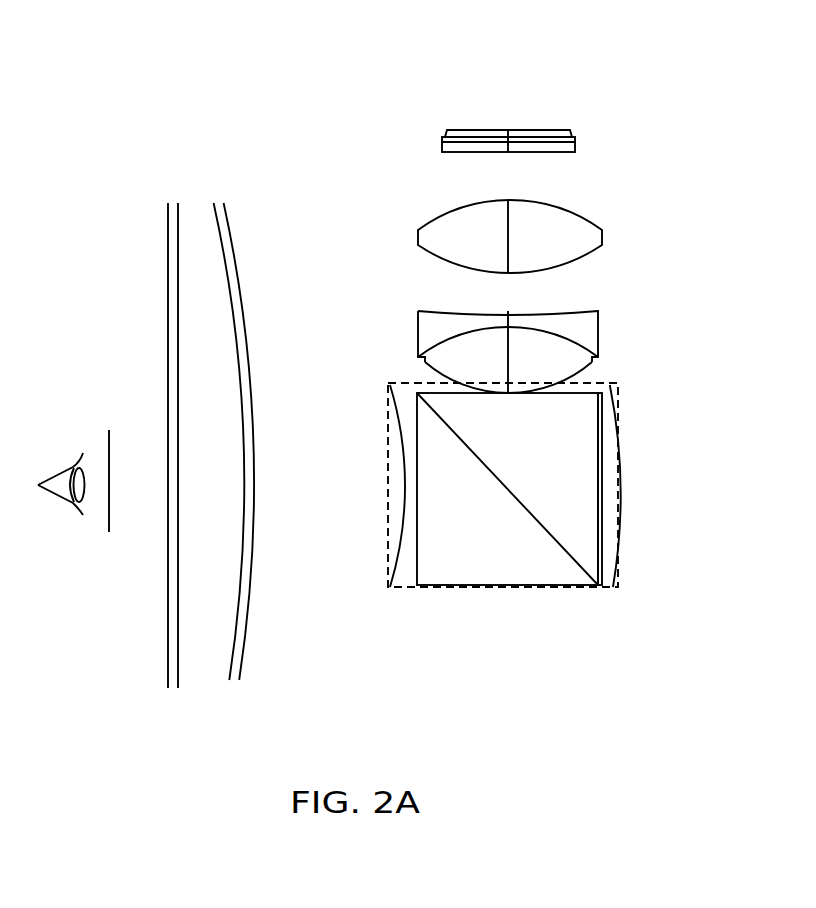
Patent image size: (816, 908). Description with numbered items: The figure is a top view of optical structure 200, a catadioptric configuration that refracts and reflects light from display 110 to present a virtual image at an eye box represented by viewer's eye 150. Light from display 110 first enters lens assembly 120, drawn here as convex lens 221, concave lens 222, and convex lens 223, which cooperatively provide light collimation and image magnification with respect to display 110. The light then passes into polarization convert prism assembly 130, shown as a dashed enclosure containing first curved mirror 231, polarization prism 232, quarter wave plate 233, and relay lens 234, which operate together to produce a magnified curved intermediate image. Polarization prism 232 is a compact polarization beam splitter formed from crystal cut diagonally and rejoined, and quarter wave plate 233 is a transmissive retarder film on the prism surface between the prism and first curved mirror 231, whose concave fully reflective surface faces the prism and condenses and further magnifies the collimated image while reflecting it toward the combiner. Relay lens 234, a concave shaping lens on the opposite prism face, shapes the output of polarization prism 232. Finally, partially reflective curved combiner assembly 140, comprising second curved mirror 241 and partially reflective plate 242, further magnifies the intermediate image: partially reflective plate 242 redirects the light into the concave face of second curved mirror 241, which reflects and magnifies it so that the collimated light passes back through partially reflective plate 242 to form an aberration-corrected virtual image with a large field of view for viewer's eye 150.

The optical structure 200 is at (177, 99).
The display 110 is at (577, 145).
The lens assembly 120 is at (515, 295).
The convex lens 221 is at (420, 237).
The concave lens 222 is at (418, 328).
The convex lens 223 is at (428, 360).
The polarization convert prism assembly 130 is at (502, 479).
The first curved mirror 231 is at (612, 402).
The polarization prism 232 is at (563, 460).
The quarter wave plate 233 is at (595, 470).
The relay lens 234 is at (398, 427).
The viewer's eye 150 is at (62, 500).
The partially reflective curved combiner assembly 140 is at (203, 475).
The second curved mirror 241 is at (242, 322).
The partially reflective plate 242 is at (167, 273).